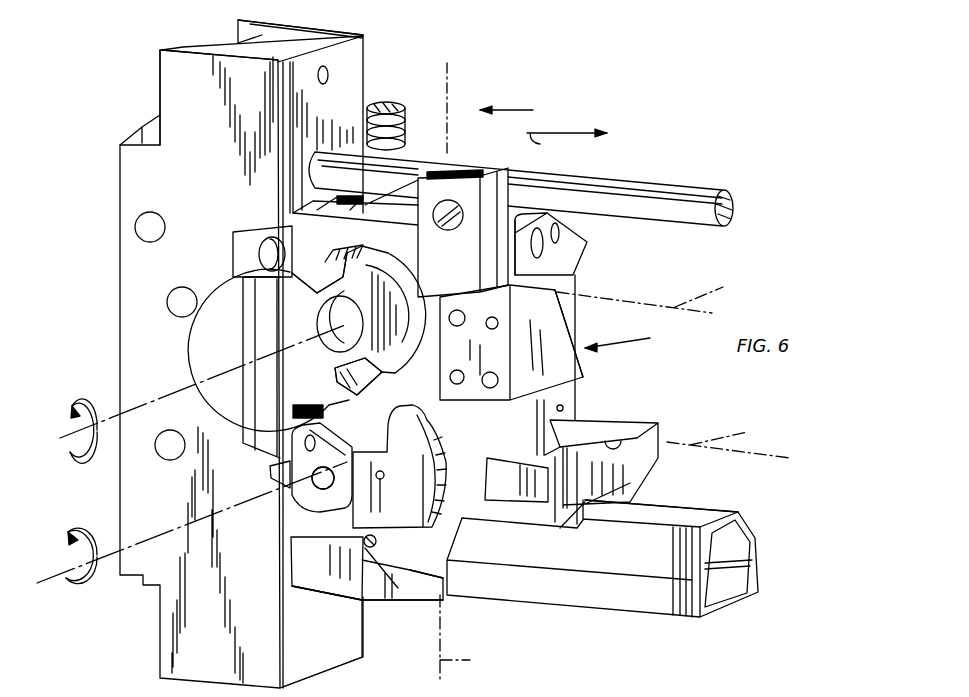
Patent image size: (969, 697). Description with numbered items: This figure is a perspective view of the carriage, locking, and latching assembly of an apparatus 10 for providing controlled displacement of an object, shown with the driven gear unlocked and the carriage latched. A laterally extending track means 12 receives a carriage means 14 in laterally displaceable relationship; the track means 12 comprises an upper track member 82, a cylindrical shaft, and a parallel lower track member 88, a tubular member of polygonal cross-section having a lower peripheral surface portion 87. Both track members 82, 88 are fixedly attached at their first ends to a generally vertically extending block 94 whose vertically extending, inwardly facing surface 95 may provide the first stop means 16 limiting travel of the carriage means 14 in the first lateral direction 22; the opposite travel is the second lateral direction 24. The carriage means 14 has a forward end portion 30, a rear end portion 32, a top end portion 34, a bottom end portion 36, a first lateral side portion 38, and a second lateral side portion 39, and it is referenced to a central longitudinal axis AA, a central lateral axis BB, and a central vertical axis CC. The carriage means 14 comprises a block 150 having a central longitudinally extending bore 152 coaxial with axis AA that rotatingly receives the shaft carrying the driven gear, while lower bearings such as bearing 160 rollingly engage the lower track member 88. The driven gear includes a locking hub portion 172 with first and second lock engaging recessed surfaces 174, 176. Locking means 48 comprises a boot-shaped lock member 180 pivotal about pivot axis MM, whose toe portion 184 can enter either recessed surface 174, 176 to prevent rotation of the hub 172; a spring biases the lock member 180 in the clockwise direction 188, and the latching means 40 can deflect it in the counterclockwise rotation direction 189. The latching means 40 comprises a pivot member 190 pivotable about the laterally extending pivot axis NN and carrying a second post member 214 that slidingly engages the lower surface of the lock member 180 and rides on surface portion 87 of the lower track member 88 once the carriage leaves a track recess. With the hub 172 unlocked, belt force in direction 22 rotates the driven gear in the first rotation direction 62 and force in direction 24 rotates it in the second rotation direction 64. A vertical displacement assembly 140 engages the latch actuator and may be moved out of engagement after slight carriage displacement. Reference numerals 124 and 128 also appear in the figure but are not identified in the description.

The apparatus 10 is at (776, 168).
The track means 12 is at (702, 182).
The carriage means 14 is at (638, 339).
The first stop means 16 is at (352, 60).
The first lateral direction 22 is at (527, 110).
The second lateral direction 24 is at (567, 145).
The forward end portion 30 is at (292, 216).
The rear end portion 32 is at (575, 276).
The top end portion 34 is at (454, 172).
The bottom end portion 36 is at (557, 518).
The first lateral side portion 38 is at (277, 398).
The second lateral side portion 39 is at (567, 373).
The latching means 40 is at (395, 593).
The locking means 48 is at (325, 540).
The first rotation direction 62 is at (68, 460).
The second rotation direction 64 is at (77, 402).
The upper track member 82 is at (624, 183).
The lower peripheral surface portion 87 is at (645, 585).
The lower track member 88 is at (740, 511).
The block 94 is at (125, 182).
The inwardly facing surface 95 is at (352, 83).
The coil spring 124 is at (404, 110).
The lower shelf 128 is at (321, 637).
The vertical displacement assembly 140 is at (172, 38).
The block 150 is at (568, 313).
The central longitudinally extending bore 152 is at (427, 293).
The lower bearing 160 is at (316, 525).
The locking hub portion 172 is at (285, 310).
The first lock engaging recessed surface 174 is at (337, 392).
The second lock engaging recessed surface 176 is at (330, 257).
The lock member 180 is at (292, 486).
The toe portion 184 is at (427, 410).
The clockwise direction 188 is at (78, 540).
The counterclockwise rotation direction 189 is at (70, 590).
The pivot member 190 is at (423, 605).
The second post member 214 is at (310, 597).
The central longitudinal axis AA is at (189, 391).
The central lateral axis BB is at (658, 294).
The central vertical axis CC is at (476, 637).
The pivot axis MM is at (187, 550).
The laterally extending pivot axis NN is at (730, 439).